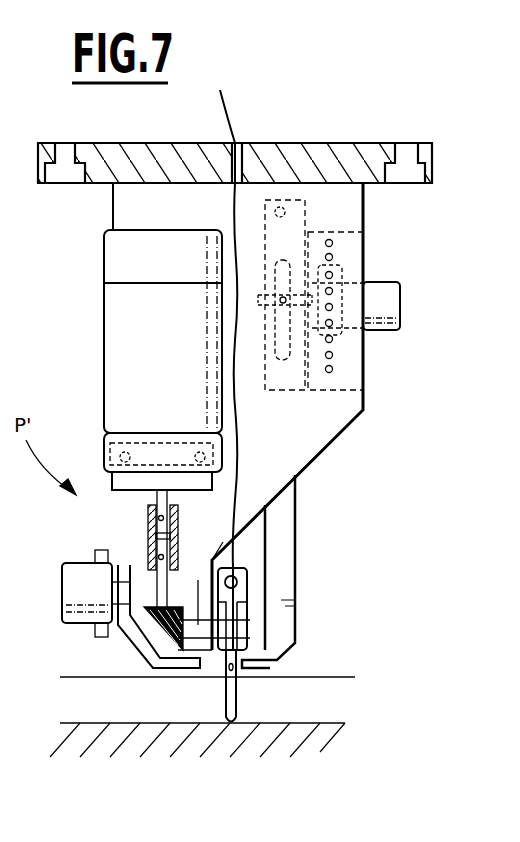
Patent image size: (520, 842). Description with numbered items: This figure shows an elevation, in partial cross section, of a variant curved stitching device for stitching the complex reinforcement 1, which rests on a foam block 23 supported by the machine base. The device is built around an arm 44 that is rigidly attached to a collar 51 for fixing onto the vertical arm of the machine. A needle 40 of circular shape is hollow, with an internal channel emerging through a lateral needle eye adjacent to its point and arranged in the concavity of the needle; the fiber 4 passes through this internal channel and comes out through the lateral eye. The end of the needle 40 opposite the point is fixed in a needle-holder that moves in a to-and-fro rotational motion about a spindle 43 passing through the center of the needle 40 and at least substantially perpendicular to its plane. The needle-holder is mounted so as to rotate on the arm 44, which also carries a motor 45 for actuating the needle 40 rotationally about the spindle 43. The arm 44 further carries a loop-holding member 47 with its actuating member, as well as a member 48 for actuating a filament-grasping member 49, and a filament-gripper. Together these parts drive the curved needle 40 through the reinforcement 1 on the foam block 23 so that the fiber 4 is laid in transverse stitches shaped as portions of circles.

The complex reinforcement 1 is at (338, 688).
The fiber 4 is at (237, 128).
The foam block 23 is at (320, 742).
The needle 40 is at (222, 722).
The spindle 43 is at (200, 568).
The arm 44 is at (340, 400).
The motor 45 is at (118, 402).
The loop-holding member 47 is at (175, 668).
The member for actuating a filament-grasping member 48 is at (388, 300).
The filament-grasping member 49 is at (262, 682).
The collar 51 is at (345, 160).